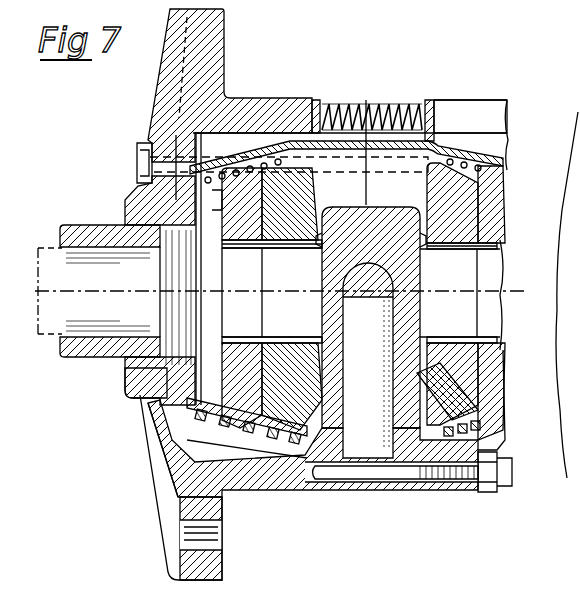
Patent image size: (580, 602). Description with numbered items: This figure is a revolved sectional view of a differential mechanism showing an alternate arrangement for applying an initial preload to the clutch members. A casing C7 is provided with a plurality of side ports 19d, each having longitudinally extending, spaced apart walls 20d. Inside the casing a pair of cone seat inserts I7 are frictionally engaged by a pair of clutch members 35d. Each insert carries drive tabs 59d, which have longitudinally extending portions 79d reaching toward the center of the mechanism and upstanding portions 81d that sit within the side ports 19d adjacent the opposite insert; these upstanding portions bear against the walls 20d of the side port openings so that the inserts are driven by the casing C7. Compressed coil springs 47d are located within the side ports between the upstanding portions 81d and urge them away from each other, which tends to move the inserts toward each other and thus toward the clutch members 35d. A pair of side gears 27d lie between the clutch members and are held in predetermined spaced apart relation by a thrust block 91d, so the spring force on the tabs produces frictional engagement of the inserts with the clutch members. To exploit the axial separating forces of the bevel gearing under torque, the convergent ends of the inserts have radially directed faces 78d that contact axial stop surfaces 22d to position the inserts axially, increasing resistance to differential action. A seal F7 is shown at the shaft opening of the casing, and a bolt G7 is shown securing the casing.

The cone seat insert I7 is at (217, 157).
The seal F7 is at (140, 170).
The compressed coil spring 47d is at (344, 115).
The side port wall 20d is at (354, 106).
The side port 19d is at (417, 103).
The upstanding portion 81d is at (437, 105).
The longitudinally extending portion 79d is at (470, 146).
The side gear 27d is at (467, 200).
The thrust block 91d is at (402, 226).
The drive tab 59d is at (358, 150).
The axial stop surface 22d is at (165, 396).
The clutch member 35d is at (183, 418).
The radially directed face 78d is at (167, 452).
The casing C7 is at (146, 478).
The bolt G7 is at (407, 435).